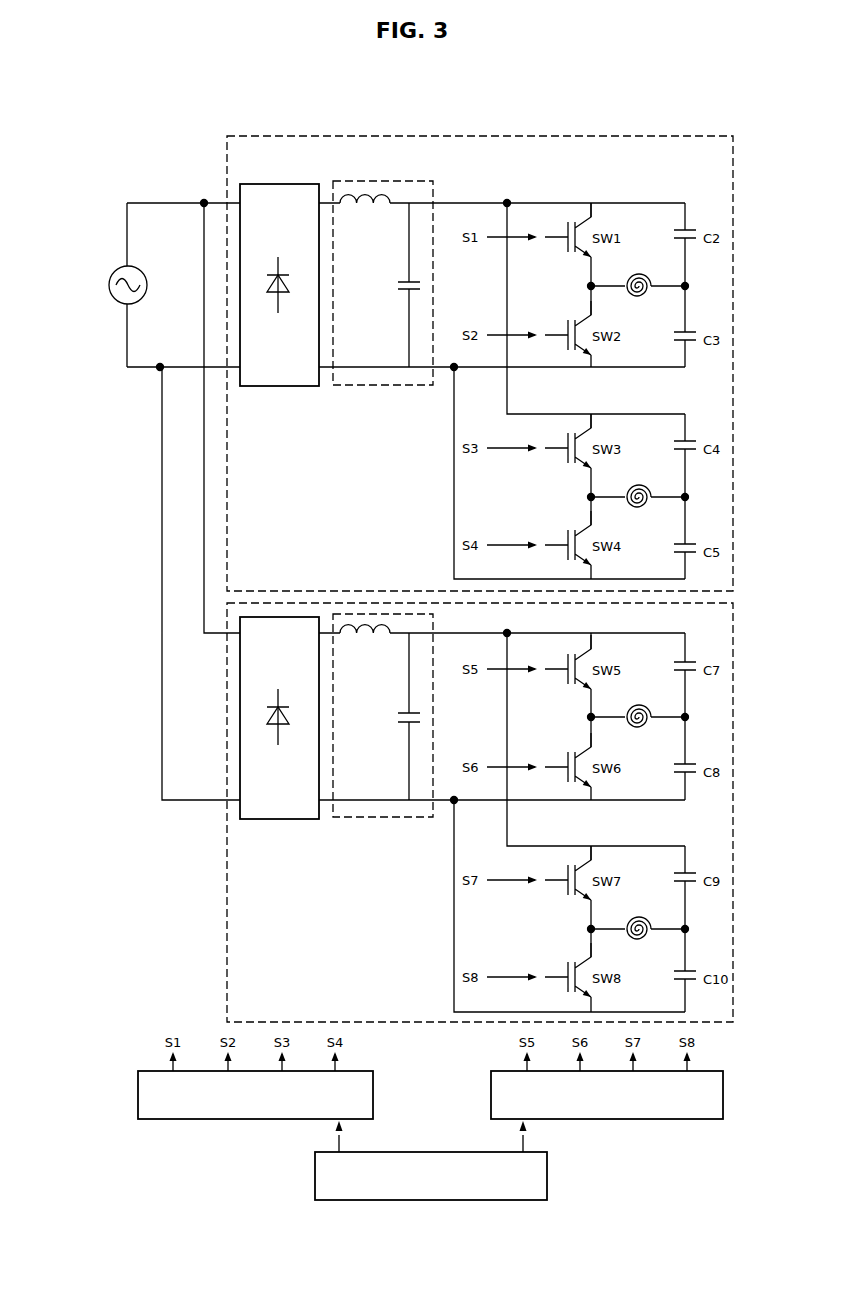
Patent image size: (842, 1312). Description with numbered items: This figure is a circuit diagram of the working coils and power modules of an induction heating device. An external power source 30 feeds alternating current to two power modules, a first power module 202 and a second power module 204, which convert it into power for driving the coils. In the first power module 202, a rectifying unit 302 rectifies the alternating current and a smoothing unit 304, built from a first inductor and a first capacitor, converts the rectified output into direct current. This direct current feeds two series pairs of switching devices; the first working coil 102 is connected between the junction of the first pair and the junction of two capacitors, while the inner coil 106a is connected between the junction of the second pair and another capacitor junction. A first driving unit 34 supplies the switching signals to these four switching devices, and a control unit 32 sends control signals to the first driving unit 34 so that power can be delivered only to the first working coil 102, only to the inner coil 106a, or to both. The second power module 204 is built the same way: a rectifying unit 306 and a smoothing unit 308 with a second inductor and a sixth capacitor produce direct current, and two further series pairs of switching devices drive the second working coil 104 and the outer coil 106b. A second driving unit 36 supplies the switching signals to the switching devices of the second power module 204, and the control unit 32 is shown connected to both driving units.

The external power source 30 is at (114, 270).
The control unit 32 is at (315, 1177).
The first driving unit 34 is at (138, 1097).
The second driving unit 36 is at (491, 1097).
The first working coil 102 is at (637, 274).
The second working coil 104 is at (638, 705).
The inner coil 106a is at (638, 486).
The outer coil 106b is at (638, 917).
The first power module 202 is at (631, 135).
The second power module 204 is at (227, 885).
The rectifying unit 302 is at (279, 184).
The smoothing unit 304 is at (383, 181).
The rectifying unit 306 is at (279, 821).
The smoothing unit 308 is at (383, 819).